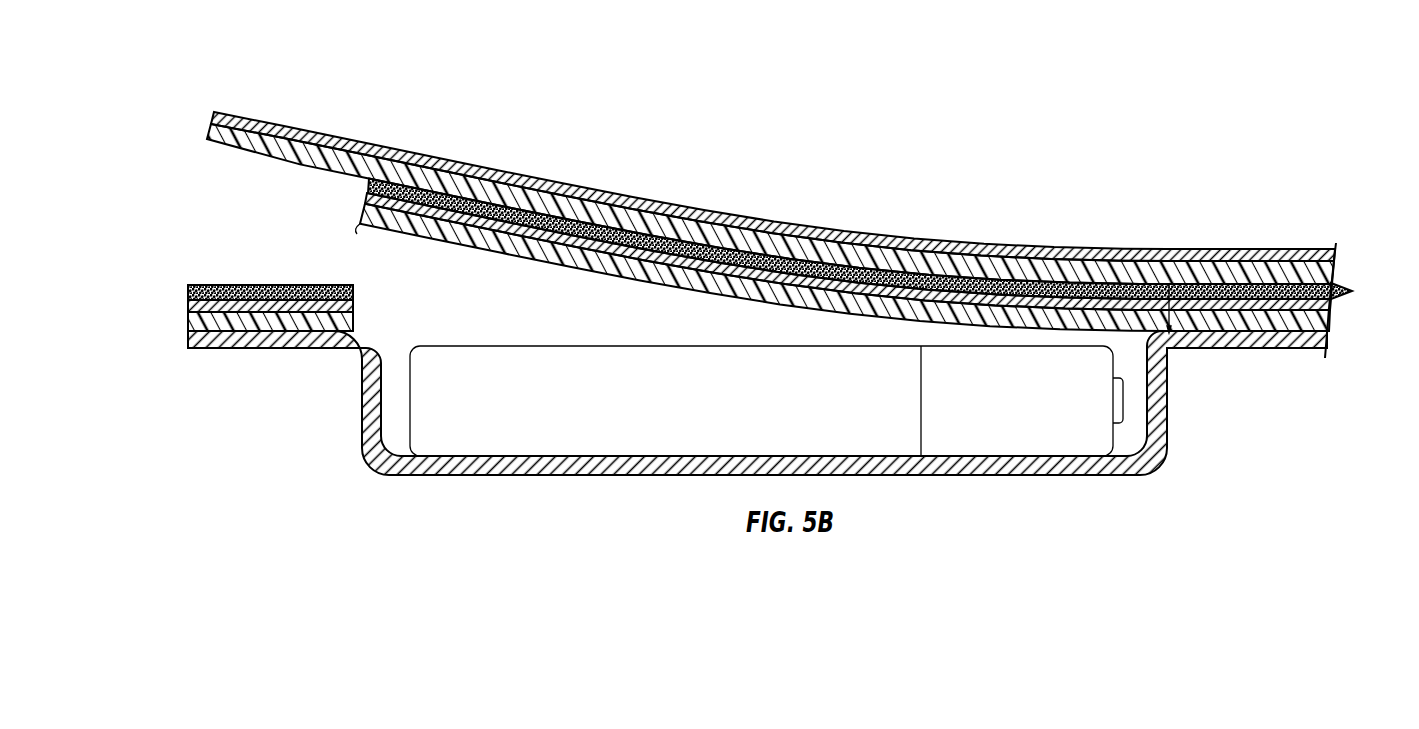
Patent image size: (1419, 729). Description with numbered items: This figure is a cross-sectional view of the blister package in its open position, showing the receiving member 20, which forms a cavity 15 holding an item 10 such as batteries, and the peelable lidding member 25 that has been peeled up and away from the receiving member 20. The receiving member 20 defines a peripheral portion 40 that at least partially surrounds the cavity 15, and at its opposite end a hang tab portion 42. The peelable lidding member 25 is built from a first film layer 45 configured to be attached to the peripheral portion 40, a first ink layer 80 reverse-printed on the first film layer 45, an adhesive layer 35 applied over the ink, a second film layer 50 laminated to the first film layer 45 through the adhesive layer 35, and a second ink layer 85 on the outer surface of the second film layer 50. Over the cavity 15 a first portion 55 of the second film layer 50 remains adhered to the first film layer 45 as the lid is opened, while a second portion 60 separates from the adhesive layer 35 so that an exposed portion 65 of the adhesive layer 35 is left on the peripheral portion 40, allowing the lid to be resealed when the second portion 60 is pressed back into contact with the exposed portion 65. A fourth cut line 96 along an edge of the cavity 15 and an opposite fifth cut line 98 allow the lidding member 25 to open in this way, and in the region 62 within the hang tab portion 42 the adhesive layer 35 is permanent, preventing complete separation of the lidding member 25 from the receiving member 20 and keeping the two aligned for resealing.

The peelable lidding member 25 is at (727, 182).
The second ink layer 85 is at (208, 109).
The second film layer 50 is at (208, 127).
The second portion 60 is at (215, 106).
The first portion 55 is at (1166, 243).
The region 62 is at (1336, 245).
The adhesive layer 35 is at (368, 186).
The first ink layer 80 is at (365, 199).
The first film layer 45 is at (360, 214).
The exposed portion 65 is at (188, 281).
The fourth cut line 96 is at (358, 232).
The fifth cut line 98 is at (1169, 333).
The cavity 15 is at (410, 318).
The receiving member 20 is at (735, 427).
The peripheral portion 40 is at (257, 353).
The hang tab portion 42 is at (1239, 352).
The item 10 is at (528, 440).